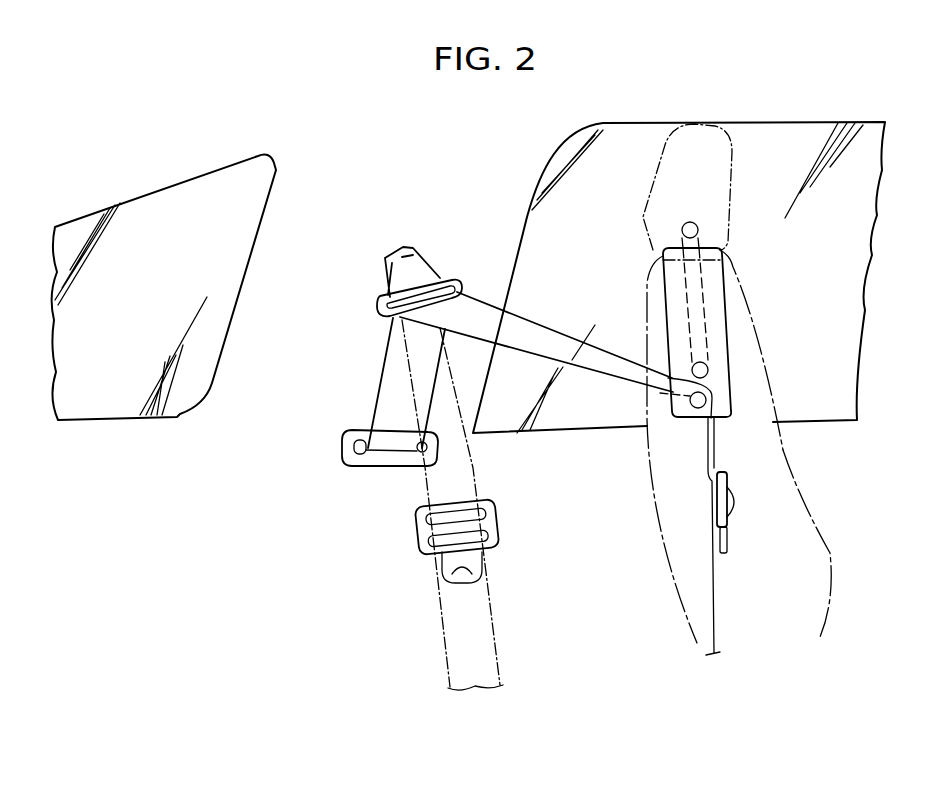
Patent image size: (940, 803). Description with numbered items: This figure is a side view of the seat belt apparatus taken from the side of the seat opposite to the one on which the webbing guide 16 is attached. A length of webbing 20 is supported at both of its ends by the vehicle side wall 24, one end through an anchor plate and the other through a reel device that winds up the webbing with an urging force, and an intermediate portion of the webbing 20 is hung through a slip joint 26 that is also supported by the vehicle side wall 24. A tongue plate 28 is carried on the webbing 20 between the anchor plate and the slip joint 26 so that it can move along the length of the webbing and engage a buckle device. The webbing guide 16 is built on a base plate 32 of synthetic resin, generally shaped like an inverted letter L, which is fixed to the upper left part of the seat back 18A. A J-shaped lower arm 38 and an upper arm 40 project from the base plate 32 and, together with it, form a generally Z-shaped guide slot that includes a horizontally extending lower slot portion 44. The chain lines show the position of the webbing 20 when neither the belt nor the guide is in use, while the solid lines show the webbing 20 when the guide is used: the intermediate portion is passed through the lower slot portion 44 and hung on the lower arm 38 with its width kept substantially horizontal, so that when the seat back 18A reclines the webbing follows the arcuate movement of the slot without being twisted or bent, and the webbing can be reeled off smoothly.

The webbing guide 16 is at (733, 261).
The seat back 18A is at (823, 518).
The webbing 20 is at (541, 325).
The vehicle side wall 24 is at (332, 341).
The slip joint 26 is at (450, 277).
The tongue plate 28 is at (493, 517).
The base plate 32 is at (651, 283).
The lower arm 38 is at (660, 393).
The upper arm 40 is at (707, 363).
The lower slot portion 44 is at (710, 382).